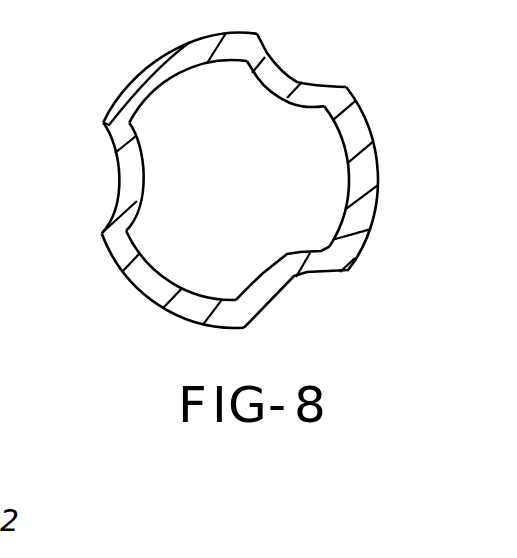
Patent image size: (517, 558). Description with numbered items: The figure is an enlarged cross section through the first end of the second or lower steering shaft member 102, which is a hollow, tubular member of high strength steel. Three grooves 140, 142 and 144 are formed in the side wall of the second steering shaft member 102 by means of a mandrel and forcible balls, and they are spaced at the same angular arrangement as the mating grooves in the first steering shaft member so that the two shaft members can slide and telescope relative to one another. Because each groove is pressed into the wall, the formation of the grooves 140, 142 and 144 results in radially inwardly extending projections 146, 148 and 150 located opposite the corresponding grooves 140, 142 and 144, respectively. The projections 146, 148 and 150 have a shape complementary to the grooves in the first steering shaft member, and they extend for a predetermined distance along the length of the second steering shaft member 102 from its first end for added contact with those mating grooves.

The second steering shaft member 102 is at (145, 50).
The groove 140 is at (300, 82).
The groove 142 is at (295, 276).
The groove 144 is at (118, 182).
The radially inwardly extending projection 146 is at (273, 98).
The radially inwardly extending projection 148 is at (268, 259).
The radially inwardly extending projection 150 is at (144, 186).